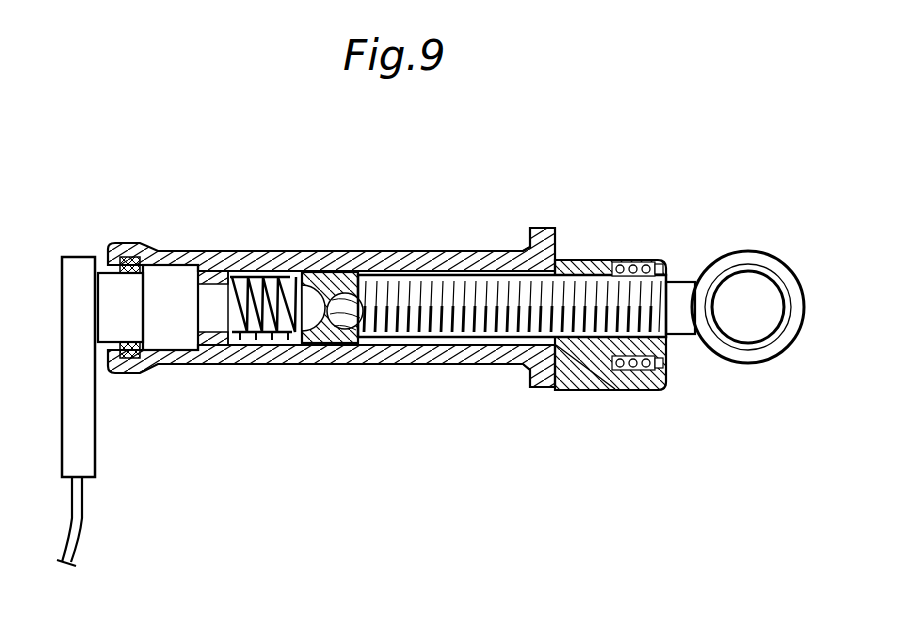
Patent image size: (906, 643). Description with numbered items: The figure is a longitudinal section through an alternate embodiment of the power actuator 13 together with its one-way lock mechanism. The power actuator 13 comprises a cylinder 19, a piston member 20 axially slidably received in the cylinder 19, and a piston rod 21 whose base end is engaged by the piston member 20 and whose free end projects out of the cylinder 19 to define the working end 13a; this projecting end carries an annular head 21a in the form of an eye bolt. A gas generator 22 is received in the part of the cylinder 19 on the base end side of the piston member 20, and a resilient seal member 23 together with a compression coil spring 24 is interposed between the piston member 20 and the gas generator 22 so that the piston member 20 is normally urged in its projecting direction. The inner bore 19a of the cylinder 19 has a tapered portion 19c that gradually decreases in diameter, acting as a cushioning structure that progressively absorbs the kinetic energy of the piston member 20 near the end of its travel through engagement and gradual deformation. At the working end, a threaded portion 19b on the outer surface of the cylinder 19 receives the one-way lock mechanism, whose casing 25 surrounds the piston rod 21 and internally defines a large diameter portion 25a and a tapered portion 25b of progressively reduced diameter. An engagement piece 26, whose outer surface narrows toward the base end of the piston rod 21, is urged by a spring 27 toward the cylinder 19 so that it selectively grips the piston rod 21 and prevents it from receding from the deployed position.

The power actuator 13 is at (325, 212).
The working end 13a is at (748, 254).
The cylinder 19 is at (330, 362).
The inner bore 19a is at (447, 270).
The threaded portion 19b is at (530, 378).
The tapered portion 19c is at (497, 270).
The piston member 20 is at (343, 273).
The piston rod 21 is at (600, 260).
The annular head 21a is at (436, 337).
The gas generator 22 is at (180, 340).
The resilient seal member 23 is at (212, 272).
The compression coil spring 24 is at (250, 338).
The casing 25 is at (560, 262).
The large diameter portion 25a is at (668, 370).
The tapered portion 25b is at (560, 390).
The engagement piece 26 is at (583, 390).
The spring 27 is at (630, 390).